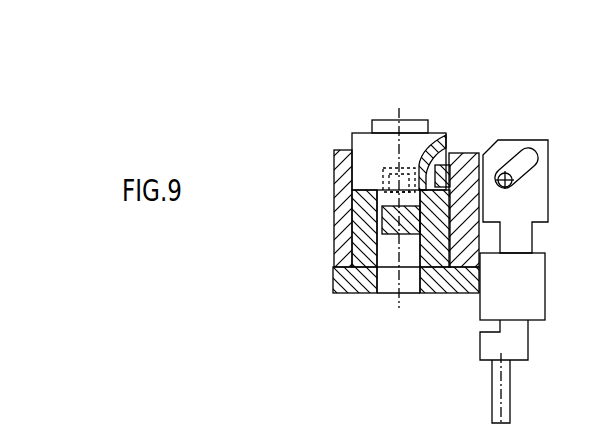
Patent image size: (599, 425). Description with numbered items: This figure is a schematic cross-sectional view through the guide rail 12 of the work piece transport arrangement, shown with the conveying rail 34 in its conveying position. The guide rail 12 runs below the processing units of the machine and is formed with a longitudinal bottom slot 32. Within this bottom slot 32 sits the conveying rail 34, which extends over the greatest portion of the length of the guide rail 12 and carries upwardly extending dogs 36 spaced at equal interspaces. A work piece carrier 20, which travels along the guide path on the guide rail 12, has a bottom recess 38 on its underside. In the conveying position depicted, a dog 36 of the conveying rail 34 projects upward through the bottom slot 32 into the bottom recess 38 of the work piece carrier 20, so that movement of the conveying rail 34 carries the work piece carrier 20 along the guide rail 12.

The guide rail 12 is at (333, 277).
The work piece carrier 20 is at (358, 143).
The longitudinal bottom slot 32 is at (415, 253).
The conveying rail 34 is at (382, 215).
The dog 36 is at (383, 190).
The bottom recess 38 is at (441, 128).